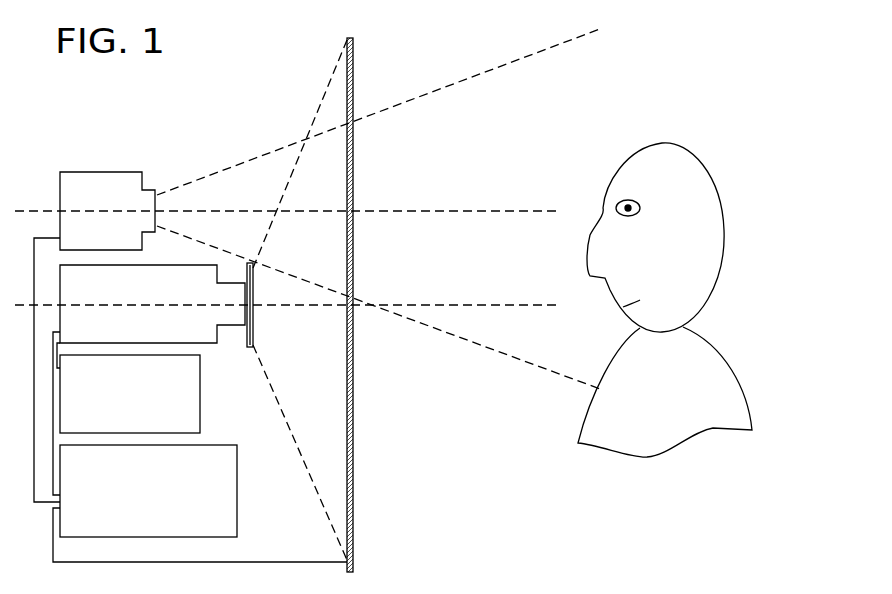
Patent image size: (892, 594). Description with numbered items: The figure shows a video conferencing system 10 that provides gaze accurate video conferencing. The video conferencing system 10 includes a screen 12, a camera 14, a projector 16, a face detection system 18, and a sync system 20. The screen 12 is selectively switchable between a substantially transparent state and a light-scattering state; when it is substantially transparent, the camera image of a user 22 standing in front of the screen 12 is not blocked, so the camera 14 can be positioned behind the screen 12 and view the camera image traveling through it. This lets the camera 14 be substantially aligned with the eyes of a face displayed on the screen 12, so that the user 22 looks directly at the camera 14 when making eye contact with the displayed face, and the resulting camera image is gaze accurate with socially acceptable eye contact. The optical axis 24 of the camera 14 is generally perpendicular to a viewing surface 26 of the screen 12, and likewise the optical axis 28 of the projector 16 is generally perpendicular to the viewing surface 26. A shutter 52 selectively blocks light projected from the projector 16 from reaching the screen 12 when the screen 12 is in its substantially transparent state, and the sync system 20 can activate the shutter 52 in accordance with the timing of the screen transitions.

The video conferencing system 10 is at (110, 121).
The screen 12 is at (347, 35).
The camera 14 is at (138, 247).
The projector 16 is at (213, 342).
The face detection system 18 is at (196, 431).
The sync system 20 is at (233, 536).
The user 22 is at (686, 439).
The optical axis 24 is at (445, 209).
The viewing surface 26 is at (354, 423).
The optical axis 28 is at (500, 303).
The shutter 52 is at (246, 349).